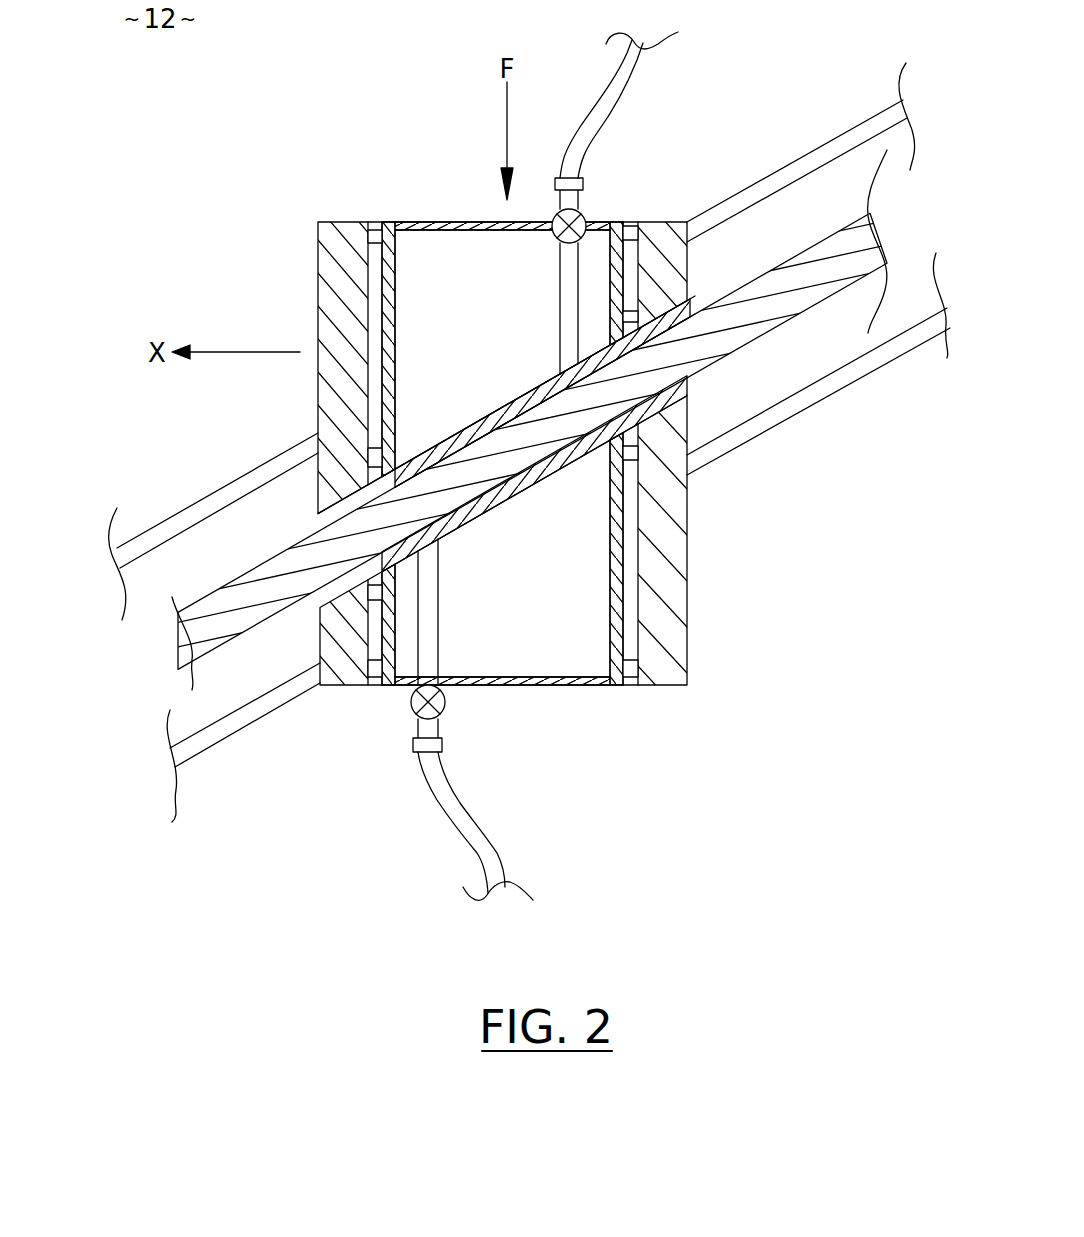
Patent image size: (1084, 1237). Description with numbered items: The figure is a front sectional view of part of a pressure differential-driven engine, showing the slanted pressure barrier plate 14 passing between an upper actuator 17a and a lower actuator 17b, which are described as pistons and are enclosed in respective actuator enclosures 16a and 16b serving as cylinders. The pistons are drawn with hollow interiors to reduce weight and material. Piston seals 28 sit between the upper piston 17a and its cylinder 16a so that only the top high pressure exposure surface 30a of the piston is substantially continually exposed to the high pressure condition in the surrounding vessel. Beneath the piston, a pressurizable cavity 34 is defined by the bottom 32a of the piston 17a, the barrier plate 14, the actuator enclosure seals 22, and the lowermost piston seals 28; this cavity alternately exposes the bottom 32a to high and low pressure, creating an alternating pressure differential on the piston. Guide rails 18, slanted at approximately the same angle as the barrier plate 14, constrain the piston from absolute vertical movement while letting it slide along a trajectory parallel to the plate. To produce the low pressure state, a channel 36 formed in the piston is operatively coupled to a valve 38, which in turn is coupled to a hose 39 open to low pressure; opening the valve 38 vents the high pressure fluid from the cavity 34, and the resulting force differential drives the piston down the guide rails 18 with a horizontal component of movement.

The pressure barrier plate 14 is at (180, 645).
The upper actuator enclosure 16a is at (318, 318).
The lower actuator enclosure 16b is at (687, 590).
The upper actuator 17a is at (443, 215).
The lower actuator 17b is at (525, 687).
The guide rails 18 is at (106, 590).
The actuator enclosure seals 22 is at (302, 542).
The piston seals 28 is at (371, 222).
The high pressure exposure surface 30a is at (471, 221).
The bottom of the piston 32a is at (438, 445).
The pressurizable cavity 34 is at (648, 331).
The channel 36 is at (586, 255).
The valve 38 is at (550, 205).
The hose 39 is at (647, 62).